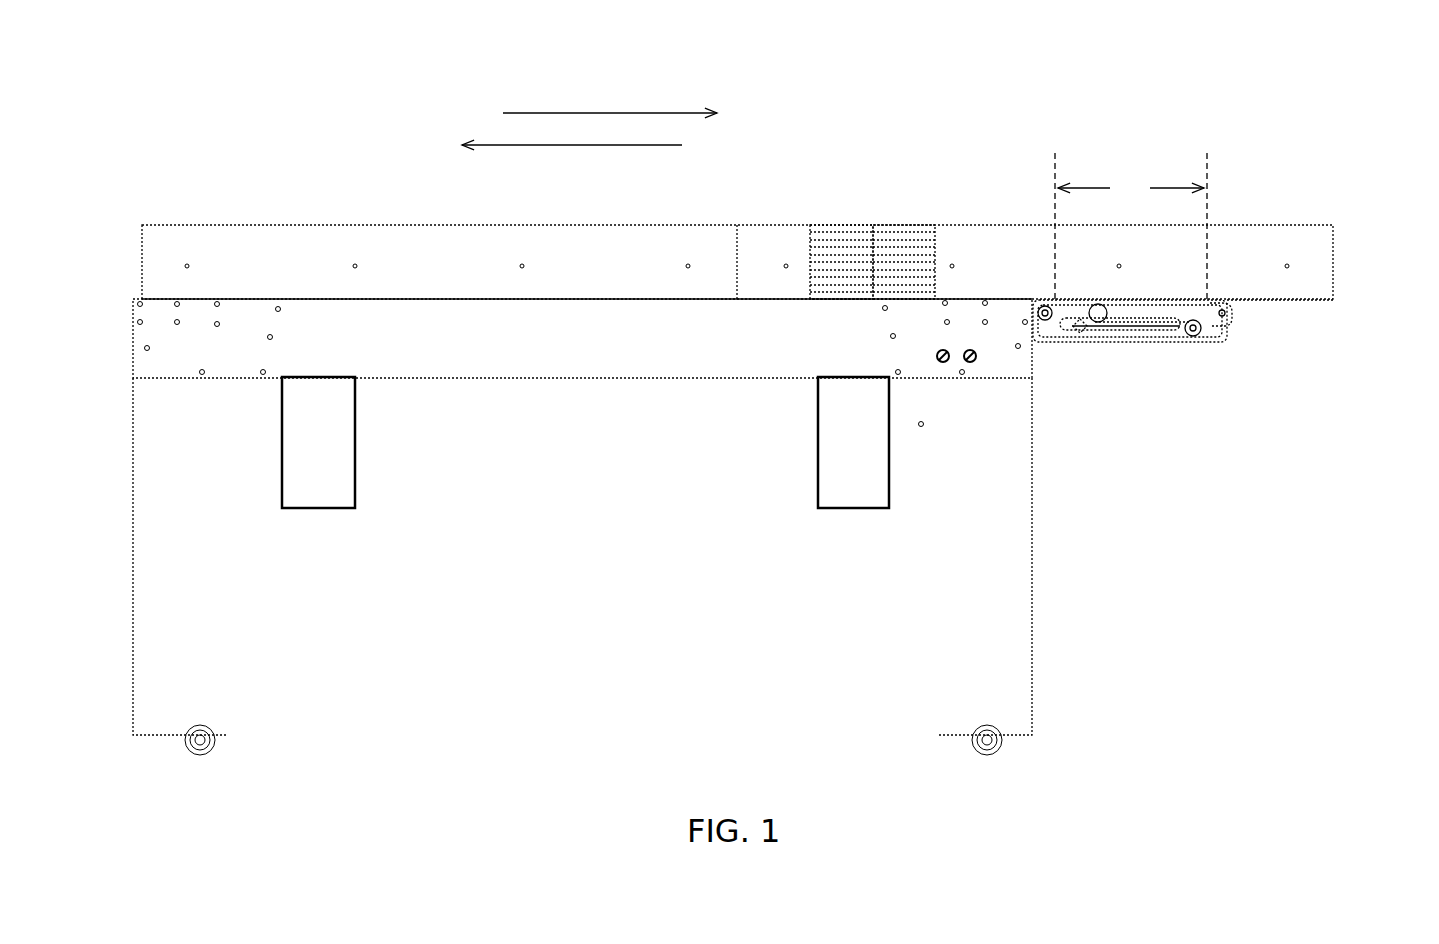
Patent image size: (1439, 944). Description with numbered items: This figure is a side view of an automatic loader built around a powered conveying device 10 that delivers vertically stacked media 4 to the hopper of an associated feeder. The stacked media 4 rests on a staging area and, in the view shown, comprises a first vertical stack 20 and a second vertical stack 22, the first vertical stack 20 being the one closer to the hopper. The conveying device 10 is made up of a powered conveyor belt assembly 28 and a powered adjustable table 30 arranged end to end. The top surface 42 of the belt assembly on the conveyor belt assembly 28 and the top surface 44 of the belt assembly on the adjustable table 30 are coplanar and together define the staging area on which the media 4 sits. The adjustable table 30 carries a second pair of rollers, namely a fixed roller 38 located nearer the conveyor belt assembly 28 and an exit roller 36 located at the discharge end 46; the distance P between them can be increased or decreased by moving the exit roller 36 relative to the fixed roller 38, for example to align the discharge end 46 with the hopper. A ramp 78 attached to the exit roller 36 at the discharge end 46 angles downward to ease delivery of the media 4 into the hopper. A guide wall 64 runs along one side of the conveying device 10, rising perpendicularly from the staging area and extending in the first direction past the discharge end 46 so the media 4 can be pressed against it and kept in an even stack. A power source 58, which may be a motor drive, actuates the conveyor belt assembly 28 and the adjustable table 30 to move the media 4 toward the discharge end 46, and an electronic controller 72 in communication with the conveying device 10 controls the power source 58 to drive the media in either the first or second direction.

The powered conveying device 10 is at (212, 133).
The guide wall 64 is at (185, 247).
The top surface of the first continuous belt assembly 42 is at (403, 297).
The vertically stacked media 4 is at (872, 211).
The second vertical stack 22 is at (843, 247).
The first vertical stack 20 is at (913, 248).
The powered conveyor belt assembly 28 is at (175, 346).
The electronic controller 72 is at (335, 460).
The power source 58 is at (838, 453).
The top surface of the second continuous belt assembly 44 is at (1191, 313).
The powered adjustable table 30 is at (1133, 337).
The fixed roller 38 is at (1048, 312).
The exit roller 36 is at (1222, 313).
The ramp 78 is at (1228, 322).
The discharge end 46 is at (1278, 302).